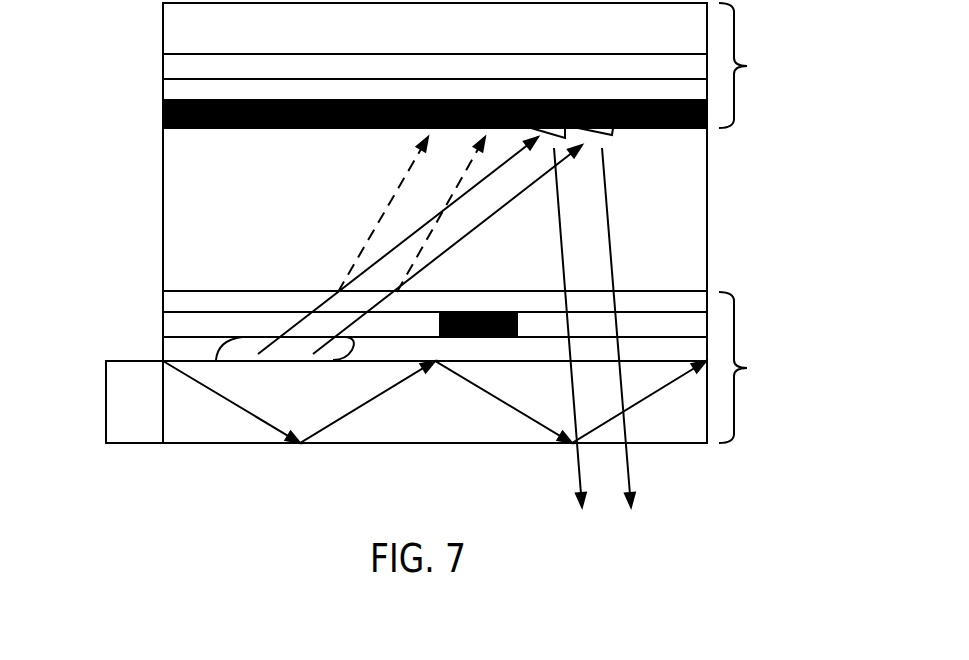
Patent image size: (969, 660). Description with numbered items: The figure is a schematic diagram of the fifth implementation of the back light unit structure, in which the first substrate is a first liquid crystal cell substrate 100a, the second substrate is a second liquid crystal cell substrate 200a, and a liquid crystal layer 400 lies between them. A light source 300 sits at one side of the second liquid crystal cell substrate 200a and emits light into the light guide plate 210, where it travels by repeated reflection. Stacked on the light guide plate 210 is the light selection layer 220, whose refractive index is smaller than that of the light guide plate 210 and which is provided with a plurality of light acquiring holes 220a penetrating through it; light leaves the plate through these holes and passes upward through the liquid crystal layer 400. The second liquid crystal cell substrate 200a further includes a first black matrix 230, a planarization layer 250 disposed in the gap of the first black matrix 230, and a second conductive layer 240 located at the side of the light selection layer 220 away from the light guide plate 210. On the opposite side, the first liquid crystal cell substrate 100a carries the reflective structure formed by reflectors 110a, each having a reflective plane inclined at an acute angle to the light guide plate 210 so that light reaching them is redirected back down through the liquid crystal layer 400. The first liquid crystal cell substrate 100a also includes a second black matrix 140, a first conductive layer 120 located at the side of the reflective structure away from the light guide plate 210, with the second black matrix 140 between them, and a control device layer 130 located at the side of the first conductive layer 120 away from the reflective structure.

The first liquid crystal cell substrate 100a is at (762, 65).
The reflector 110a is at (613, 134).
The first conductive layer 120 is at (178, 93).
The control device layer 130 is at (178, 70).
The second black matrix 140 is at (163, 111).
The second liquid crystal cell substrate 200a is at (762, 367).
The light guide plate 210 is at (445, 428).
The light selection layer 220 is at (177, 350).
The light acquiring hole 220a is at (262, 342).
The first black matrix 230 is at (472, 310).
The second conductive layer 240 is at (177, 302).
The planarization layer 250 is at (177, 325).
The light source 300 is at (123, 410).
The liquid crystal layer 400 is at (695, 220).